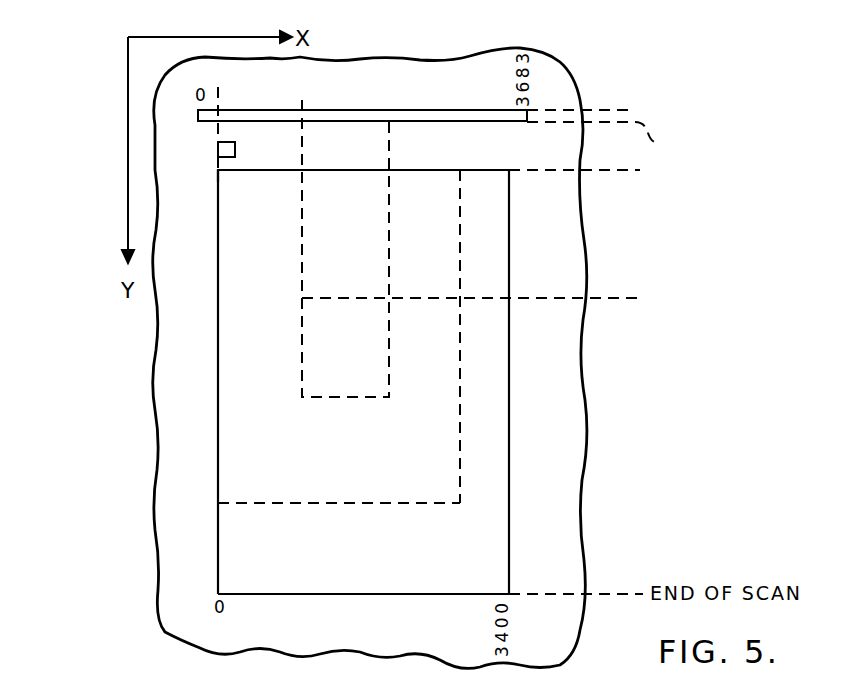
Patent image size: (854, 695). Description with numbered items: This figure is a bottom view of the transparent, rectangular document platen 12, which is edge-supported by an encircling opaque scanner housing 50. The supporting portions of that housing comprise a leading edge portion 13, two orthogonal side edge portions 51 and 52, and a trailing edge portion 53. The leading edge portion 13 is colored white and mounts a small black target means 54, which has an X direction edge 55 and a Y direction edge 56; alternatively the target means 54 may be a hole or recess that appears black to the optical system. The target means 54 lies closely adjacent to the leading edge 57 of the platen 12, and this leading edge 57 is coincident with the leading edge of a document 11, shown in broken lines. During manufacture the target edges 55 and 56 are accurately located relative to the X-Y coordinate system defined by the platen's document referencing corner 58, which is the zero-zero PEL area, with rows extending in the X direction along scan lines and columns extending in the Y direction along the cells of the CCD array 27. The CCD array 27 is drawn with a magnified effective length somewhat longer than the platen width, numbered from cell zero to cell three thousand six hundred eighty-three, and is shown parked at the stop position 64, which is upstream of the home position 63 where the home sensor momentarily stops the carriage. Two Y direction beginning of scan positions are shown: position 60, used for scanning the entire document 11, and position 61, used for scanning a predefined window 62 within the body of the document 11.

The document 11 is at (407, 505).
The document platen 12 is at (337, 392).
The leading edge portion 13 is at (372, 153).
The CCD array 27 is at (194, 117).
The scanner housing 50 is at (584, 449).
The side edge portion 51 is at (533, 405).
The side edge portion 52 is at (188, 417).
The trailing edge portion 53 is at (430, 614).
The target means 54 is at (240, 130).
The X direction edge 55 is at (218, 150).
The Y direction edge 56 is at (236, 159).
The leading edge 57 is at (441, 172).
The document referencing corner 58 is at (219, 171).
The beginning of scan position 60 is at (567, 172).
The beginning of scan position 61 is at (565, 300).
The window 62 is at (365, 358).
The home position 63 is at (603, 122).
The stop position 64 is at (549, 110).